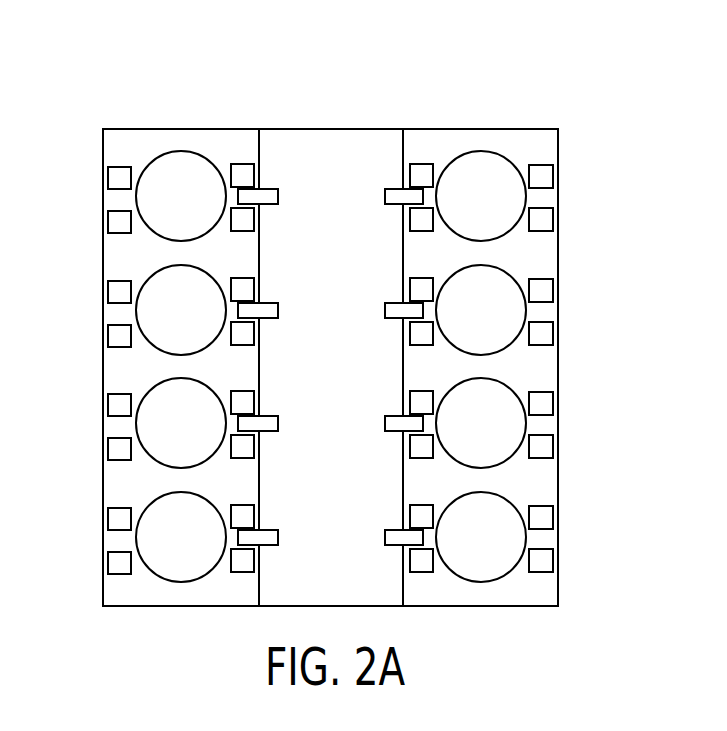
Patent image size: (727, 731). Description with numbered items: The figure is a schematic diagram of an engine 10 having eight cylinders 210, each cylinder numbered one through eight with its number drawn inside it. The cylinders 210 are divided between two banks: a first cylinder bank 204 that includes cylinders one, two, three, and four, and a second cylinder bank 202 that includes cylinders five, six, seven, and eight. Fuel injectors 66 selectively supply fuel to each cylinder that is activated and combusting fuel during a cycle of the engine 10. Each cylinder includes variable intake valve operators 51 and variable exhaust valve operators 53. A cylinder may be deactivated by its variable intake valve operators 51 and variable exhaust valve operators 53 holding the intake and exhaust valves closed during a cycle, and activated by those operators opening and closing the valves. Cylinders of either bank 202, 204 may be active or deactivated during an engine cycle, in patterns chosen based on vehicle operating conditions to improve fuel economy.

The engine 10 is at (410, 48).
The second cylinder bank 202 is at (165, 76).
The first cylinder bank 204 is at (515, 83).
The cylinders 210 is at (333, 366).
The variable intake valve operators 51 is at (332, 366).
The variable exhaust valve operators 53 is at (336, 359).
The fuel injectors 66 is at (330, 375).